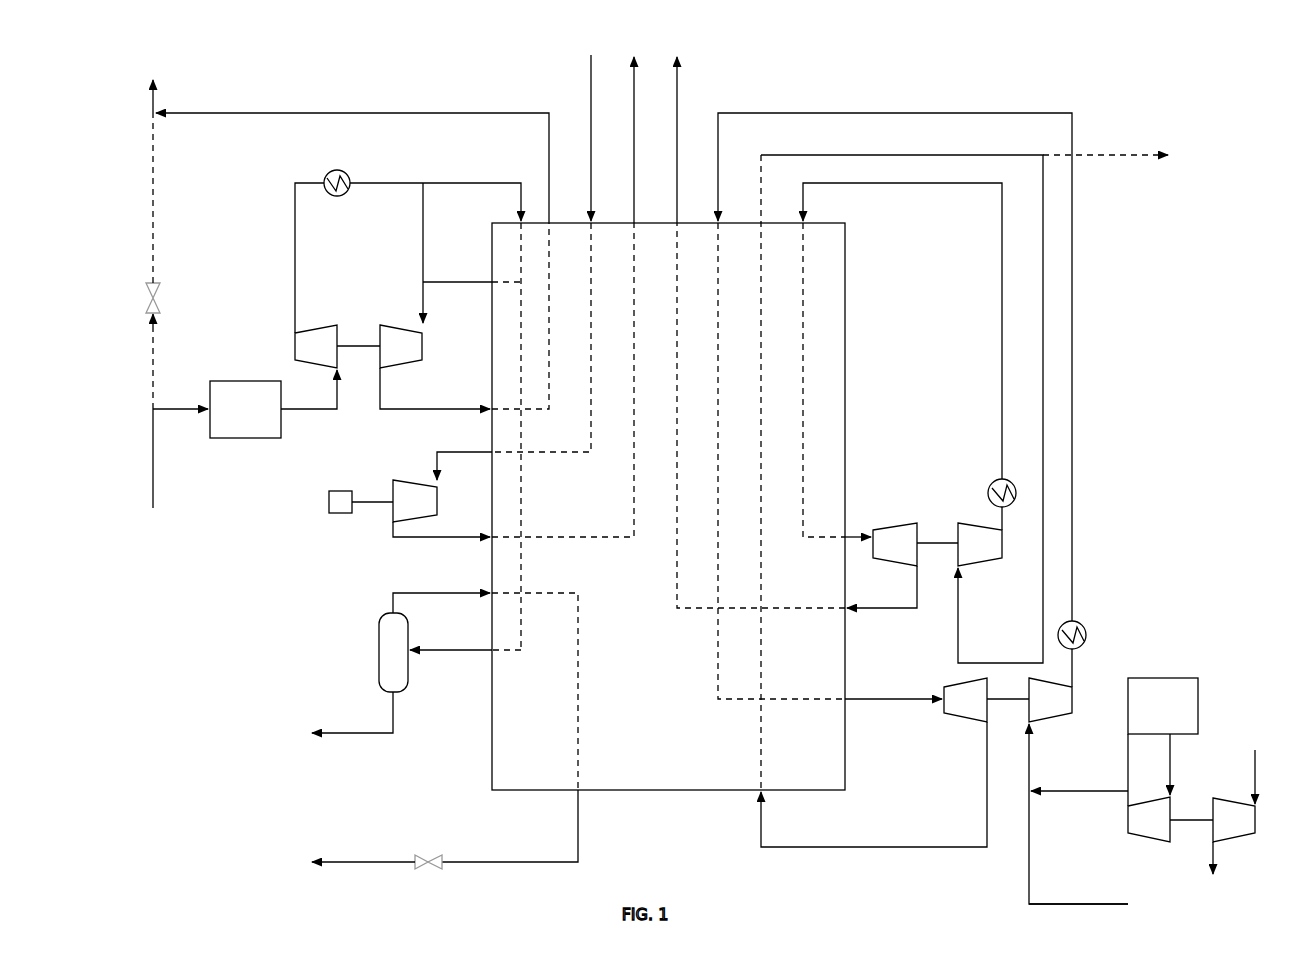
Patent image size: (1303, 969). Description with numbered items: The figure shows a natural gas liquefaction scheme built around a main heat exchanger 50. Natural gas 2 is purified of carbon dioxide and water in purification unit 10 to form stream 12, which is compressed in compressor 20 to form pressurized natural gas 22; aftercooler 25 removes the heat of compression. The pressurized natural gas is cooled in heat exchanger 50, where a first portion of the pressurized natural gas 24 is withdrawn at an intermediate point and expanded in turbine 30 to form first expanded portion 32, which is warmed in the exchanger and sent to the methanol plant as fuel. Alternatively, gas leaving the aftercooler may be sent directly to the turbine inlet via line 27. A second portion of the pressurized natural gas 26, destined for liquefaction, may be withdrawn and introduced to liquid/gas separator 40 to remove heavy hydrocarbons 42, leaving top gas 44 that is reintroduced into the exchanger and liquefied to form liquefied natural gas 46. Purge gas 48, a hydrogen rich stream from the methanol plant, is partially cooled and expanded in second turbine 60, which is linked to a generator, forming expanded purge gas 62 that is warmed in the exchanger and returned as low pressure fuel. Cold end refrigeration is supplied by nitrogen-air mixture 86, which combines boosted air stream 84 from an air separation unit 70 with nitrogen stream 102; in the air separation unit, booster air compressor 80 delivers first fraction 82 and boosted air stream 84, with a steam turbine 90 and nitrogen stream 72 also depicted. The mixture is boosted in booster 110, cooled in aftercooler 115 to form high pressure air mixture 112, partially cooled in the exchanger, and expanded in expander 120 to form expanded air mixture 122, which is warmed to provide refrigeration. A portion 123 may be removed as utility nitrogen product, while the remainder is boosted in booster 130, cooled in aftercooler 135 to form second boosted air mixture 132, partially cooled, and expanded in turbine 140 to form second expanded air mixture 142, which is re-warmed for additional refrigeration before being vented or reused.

The natural gas 2 is at (174, 409).
The purification unit 10 is at (245, 409).
The stream 12 is at (319, 409).
The compressor 20 is at (337, 346).
The pressurized natural gas 22 is at (295, 244).
The first portion of the pressurized natural gas 24 is at (475, 282).
The aftercooler 25 is at (344, 172).
The second portion of the pressurized natural gas 26 is at (444, 650).
The line 27 is at (423, 232).
The turbine 30 is at (401, 346).
The first expanded portion 32 is at (422, 113).
The liquid/gas separator 40 is at (393, 652).
The heavy hydrocarbons 42 is at (367, 733).
The top gas 44 is at (455, 593).
The liquefied natural gas 46 is at (467, 862).
The purge gas 48 is at (591, 120).
The heat exchanger 50 is at (847, 344).
The second turbine 60 is at (383, 501).
The expanded purge gas 62 is at (634, 118).
The air separation unit 70 is at (1172, 678).
The nitrogen stream 72 is at (1172, 770).
The booster air compressor 80 is at (1170, 819).
The first fraction 82 is at (1132, 780).
The boosted air stream 84 is at (1066, 791).
The nitrogen-air mixture 86 is at (1031, 742).
The steam turbine 90 is at (1236, 812).
The nitrogen stream 102 is at (1038, 904).
The booster 110 is at (1050, 700).
The high pressure air mixture 112 is at (1072, 332).
The aftercooler 115 is at (1083, 630).
The expander 120 is at (986, 700).
The expanded air mixture 122 is at (914, 155).
The portion 123 is at (1125, 155).
The booster 130 is at (980, 544).
The second boosted air mixture 132 is at (1002, 382).
The aftercooler 135 is at (986, 492).
The turbine 140 is at (915, 544).
The second expanded air mixture 142 is at (677, 108).